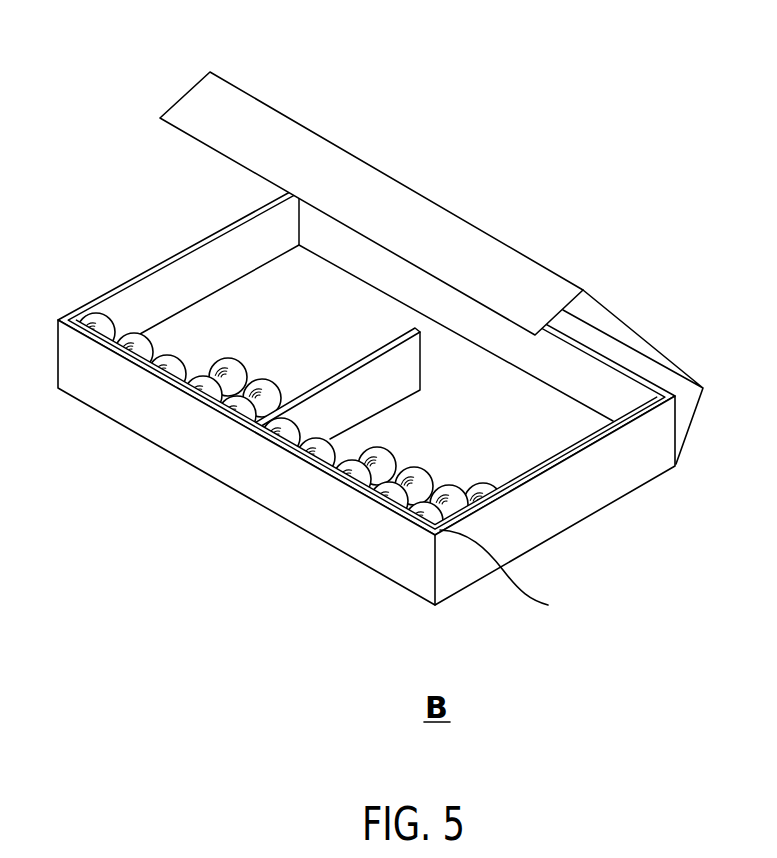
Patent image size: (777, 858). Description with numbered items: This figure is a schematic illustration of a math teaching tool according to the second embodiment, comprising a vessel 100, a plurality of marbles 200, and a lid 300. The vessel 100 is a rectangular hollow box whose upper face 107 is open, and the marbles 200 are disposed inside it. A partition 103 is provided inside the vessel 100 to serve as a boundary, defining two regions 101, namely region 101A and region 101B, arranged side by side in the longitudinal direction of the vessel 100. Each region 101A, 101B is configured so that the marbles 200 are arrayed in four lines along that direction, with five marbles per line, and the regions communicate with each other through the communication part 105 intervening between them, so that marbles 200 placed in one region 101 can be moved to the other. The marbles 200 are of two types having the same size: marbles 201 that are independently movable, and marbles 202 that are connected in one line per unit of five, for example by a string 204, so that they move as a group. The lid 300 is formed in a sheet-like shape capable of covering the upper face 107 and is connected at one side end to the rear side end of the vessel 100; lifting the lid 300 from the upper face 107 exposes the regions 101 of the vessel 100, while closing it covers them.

The vessel 100 is at (369, 376).
The region 101 is at (339, 331).
The region 101A is at (252, 270).
The region 101B is at (456, 354).
The partition 103 is at (343, 413).
The communication part 105 is at (437, 365).
The upper face 107 is at (214, 229).
The plurality of marbles 200 is at (222, 327).
The marble 201 is at (515, 486).
The marble 202 is at (360, 476).
The string 204 is at (523, 593).
The lid 300 is at (191, 83).